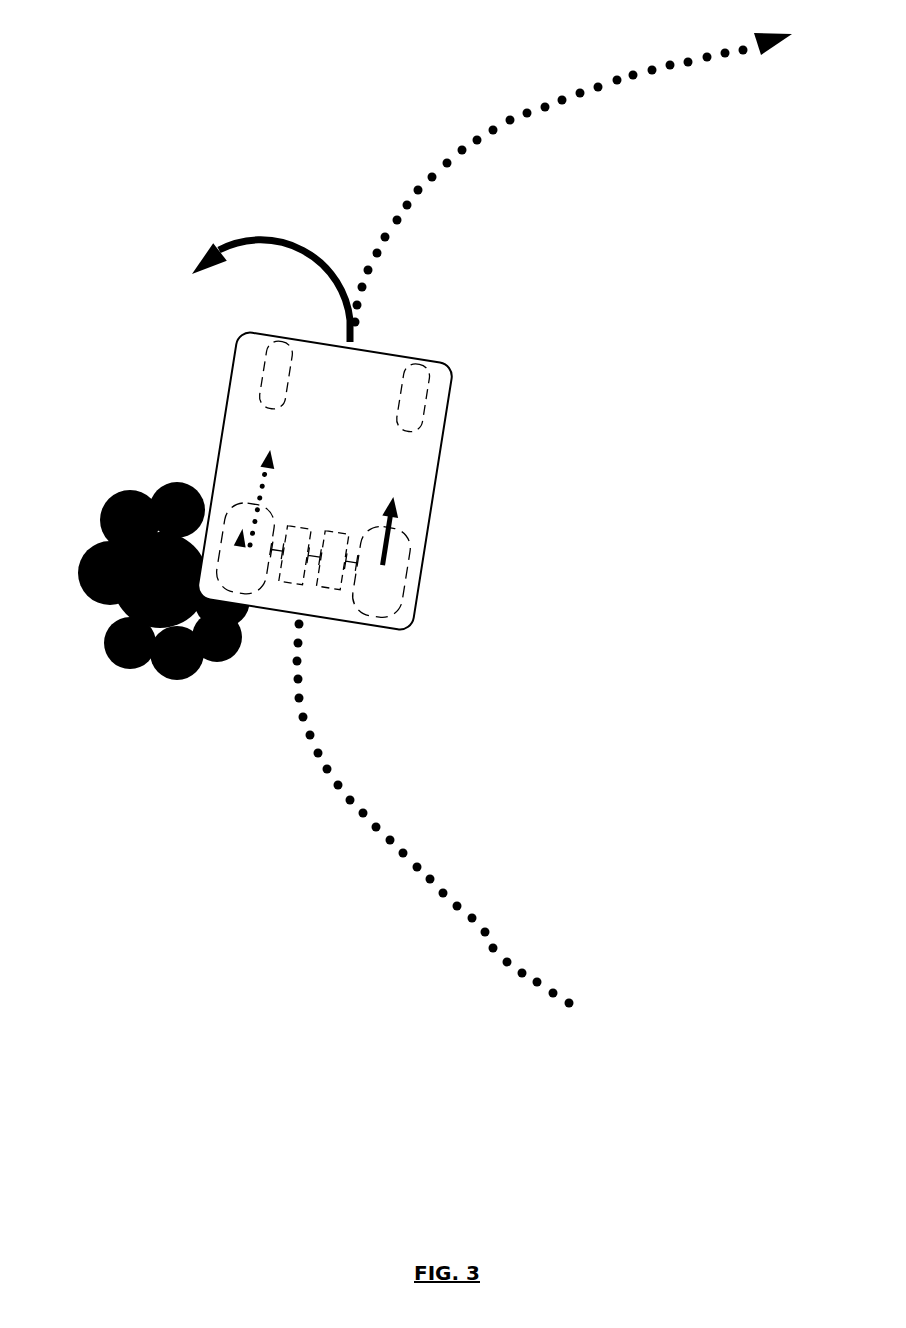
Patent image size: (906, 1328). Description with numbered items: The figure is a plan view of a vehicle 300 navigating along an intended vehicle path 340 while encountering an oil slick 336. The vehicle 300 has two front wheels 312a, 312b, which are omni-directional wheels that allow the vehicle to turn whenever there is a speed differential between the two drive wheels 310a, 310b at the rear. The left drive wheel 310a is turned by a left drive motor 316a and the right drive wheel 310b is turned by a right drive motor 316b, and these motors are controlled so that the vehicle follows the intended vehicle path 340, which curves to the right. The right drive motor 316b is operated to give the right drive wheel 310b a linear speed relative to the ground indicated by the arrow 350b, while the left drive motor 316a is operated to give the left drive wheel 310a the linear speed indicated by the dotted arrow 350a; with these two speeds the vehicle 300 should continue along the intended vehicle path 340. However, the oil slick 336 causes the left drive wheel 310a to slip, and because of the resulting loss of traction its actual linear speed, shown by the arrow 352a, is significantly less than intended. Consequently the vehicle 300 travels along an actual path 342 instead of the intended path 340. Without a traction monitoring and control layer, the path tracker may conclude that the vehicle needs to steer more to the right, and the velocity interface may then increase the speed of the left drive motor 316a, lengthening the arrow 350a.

The vehicle 300 is at (325, 481).
The left drive wheel 310a is at (227, 527).
The right drive wheel 310b is at (408, 575).
The front wheel 312a is at (267, 373).
The front wheel 312b is at (427, 400).
The left drive motor 316a is at (292, 583).
The right drive motor 316b is at (328, 595).
The oil slick 336 is at (83, 578).
The intended vehicle path 340 is at (505, 126).
The actual path 342 is at (258, 241).
The dotted arrow 350a is at (242, 533).
The arrow 350b is at (397, 505).
The arrow 352a is at (265, 461).